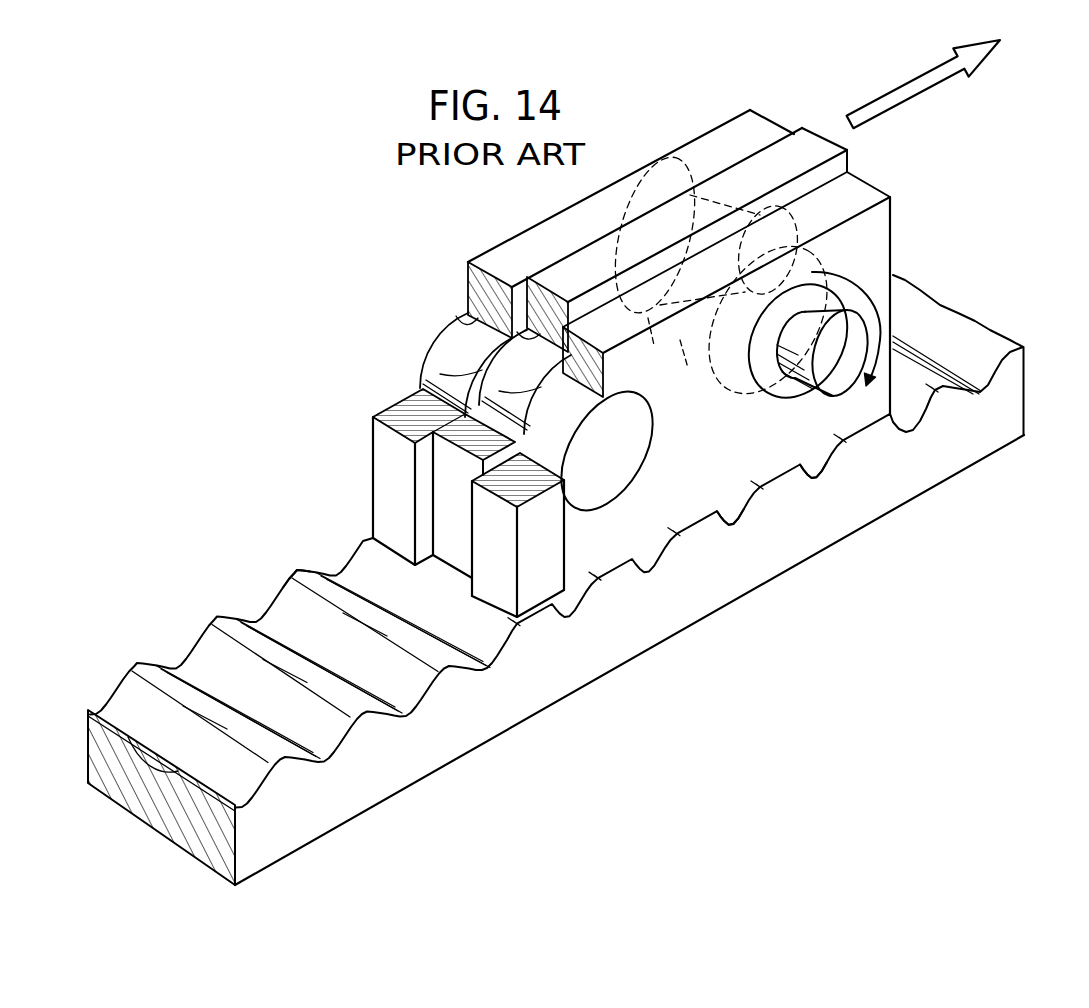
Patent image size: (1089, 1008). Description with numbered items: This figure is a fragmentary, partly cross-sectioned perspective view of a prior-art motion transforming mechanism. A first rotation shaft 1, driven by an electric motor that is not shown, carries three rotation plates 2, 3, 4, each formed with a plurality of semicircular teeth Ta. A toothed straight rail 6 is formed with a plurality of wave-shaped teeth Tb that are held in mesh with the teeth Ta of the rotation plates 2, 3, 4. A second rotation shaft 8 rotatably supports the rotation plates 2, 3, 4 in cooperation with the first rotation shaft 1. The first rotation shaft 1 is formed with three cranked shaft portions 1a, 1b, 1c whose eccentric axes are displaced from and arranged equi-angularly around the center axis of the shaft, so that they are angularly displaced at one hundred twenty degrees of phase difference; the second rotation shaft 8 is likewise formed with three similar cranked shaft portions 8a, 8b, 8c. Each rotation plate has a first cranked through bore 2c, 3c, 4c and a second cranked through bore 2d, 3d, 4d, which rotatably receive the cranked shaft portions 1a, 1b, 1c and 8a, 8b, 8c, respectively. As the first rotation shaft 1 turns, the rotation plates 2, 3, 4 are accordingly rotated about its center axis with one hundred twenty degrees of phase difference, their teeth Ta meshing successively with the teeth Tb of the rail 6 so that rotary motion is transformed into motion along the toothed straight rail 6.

The first rotation shaft 1 is at (850, 398).
The cranked shaft portion 1a is at (813, 266).
The cranked shaft portion 1b is at (775, 235).
The cranked shaft portion 1c is at (676, 162).
The rotation plate 2 is at (893, 215).
The first cranked through bore 2c is at (757, 393).
The second cranked through bore 2d is at (542, 404).
The rotation plate 3 is at (827, 150).
The first cranked through bore 3c is at (684, 355).
The second cranked through bore 3d is at (455, 331).
The rotation plate 4 is at (784, 128).
The first cranked through bore 4c is at (653, 335).
The second cranked through bore 4d is at (466, 318).
The toothed straight rail 6 is at (652, 650).
The second rotation shaft 8 is at (633, 470).
The cranked shaft portion 8a is at (443, 352).
The cranked shaft portion 8b is at (418, 388).
The cranked shaft portion 8c is at (565, 492).
The teeth Ta is at (836, 470).
The teeth Tb is at (300, 578).